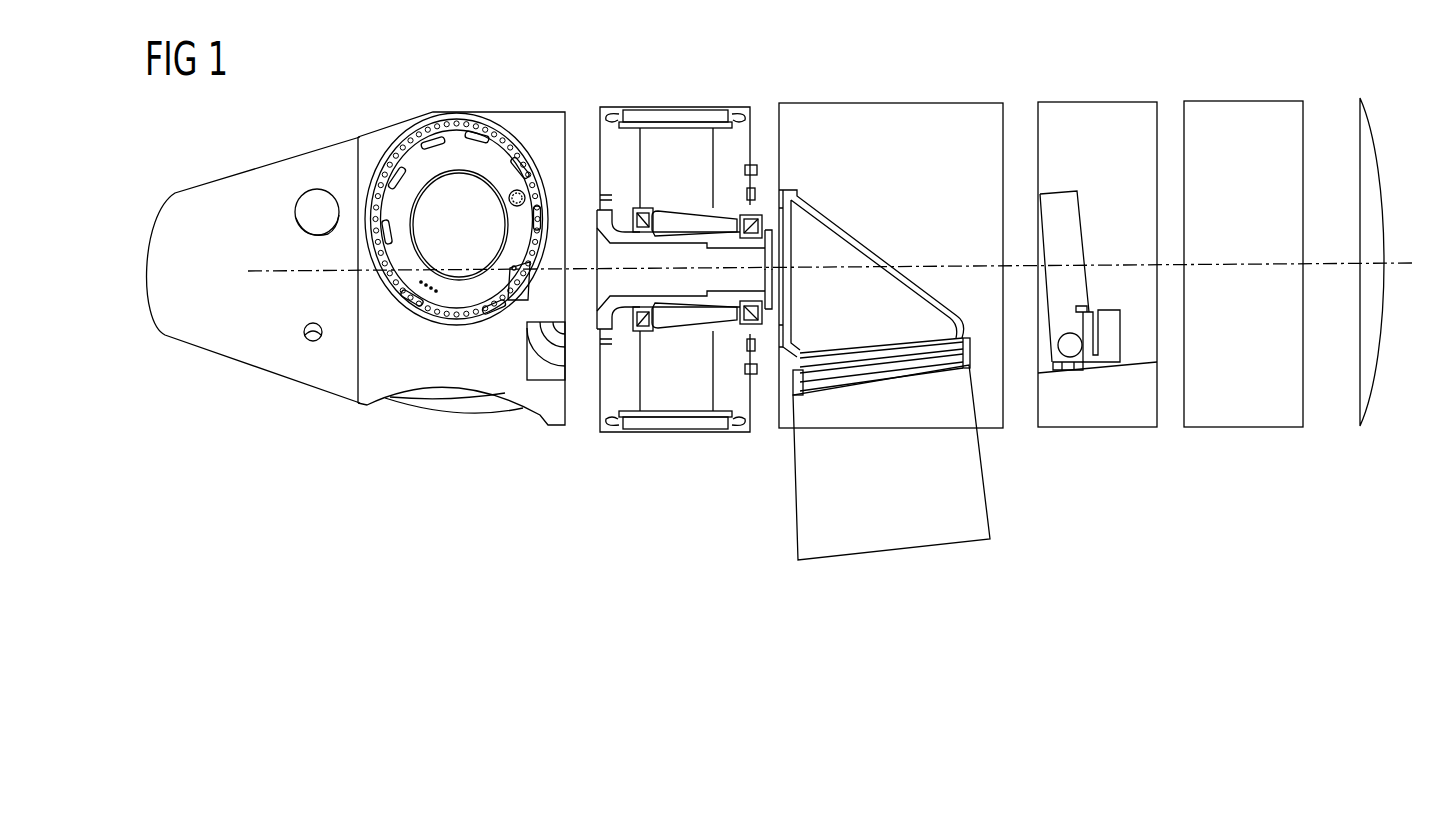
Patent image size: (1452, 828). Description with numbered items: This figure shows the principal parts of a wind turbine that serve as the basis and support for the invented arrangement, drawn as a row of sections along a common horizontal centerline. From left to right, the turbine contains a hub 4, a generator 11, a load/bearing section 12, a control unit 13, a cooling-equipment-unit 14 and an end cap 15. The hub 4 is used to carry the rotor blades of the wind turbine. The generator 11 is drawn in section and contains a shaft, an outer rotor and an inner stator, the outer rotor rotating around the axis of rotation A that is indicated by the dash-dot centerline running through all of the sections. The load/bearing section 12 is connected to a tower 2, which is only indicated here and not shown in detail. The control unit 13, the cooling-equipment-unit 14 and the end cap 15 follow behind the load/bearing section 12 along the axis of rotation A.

The tower 2 is at (968, 494).
The hub 4 is at (320, 160).
The generator 11 is at (676, 107).
The load/bearing section 12 is at (897, 110).
The control unit 13 is at (1098, 110).
The cooling-equipment-unit 14 is at (1247, 112).
The end cap 15 is at (1367, 115).
The axis of rotation A is at (1407, 256).